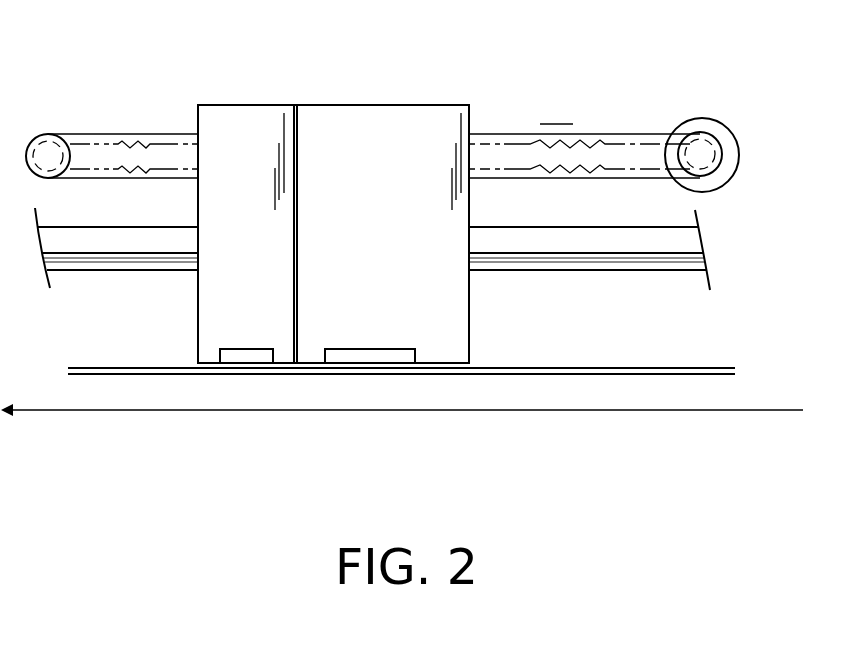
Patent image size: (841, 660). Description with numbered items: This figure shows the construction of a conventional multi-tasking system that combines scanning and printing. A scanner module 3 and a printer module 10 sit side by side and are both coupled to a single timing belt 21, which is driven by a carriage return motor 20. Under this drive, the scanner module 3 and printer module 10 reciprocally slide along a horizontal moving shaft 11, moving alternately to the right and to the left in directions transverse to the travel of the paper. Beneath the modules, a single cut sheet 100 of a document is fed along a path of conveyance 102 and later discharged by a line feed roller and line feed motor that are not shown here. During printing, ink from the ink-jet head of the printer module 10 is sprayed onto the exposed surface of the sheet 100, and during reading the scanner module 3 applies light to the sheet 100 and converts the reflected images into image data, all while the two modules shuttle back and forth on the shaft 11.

The scanner module 3 is at (252, 105).
The printer module 10 is at (398, 105).
The horizontal moving shaft 11 is at (688, 243).
The carriage return motor 20 is at (733, 160).
The timing belt 21 is at (137, 133).
The sheet 100 is at (695, 368).
The path of conveyance 102 is at (520, 410).